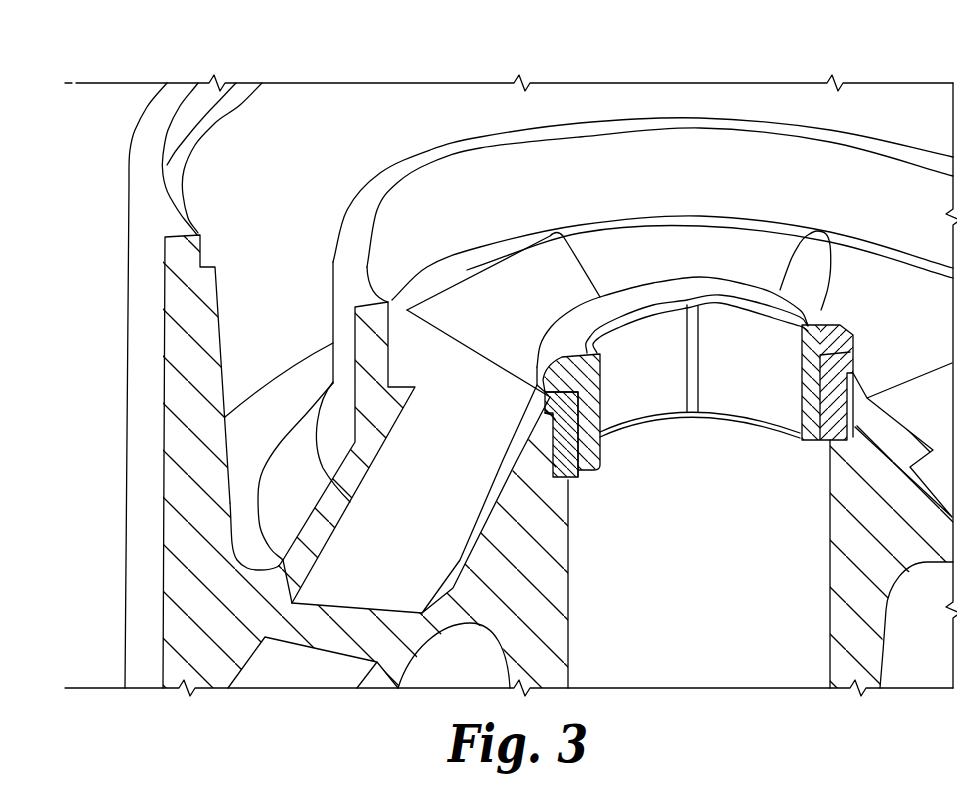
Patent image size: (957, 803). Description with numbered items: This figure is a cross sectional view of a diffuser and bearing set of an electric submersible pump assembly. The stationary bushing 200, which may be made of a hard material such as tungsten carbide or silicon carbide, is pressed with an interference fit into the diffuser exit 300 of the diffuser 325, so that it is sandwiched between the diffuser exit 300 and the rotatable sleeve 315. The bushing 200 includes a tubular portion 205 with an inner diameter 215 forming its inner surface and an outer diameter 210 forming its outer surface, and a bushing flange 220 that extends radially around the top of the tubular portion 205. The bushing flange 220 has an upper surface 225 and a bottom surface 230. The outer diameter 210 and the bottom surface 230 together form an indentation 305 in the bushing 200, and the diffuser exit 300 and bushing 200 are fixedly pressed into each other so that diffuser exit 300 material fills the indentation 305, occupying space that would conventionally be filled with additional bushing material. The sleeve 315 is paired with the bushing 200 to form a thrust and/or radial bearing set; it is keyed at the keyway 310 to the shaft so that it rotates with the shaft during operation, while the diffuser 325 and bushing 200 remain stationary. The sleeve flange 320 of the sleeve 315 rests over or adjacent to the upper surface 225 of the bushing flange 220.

The bushing 200 is at (558, 454).
The tubular portion 205 is at (567, 437).
The outer diameter 210 is at (550, 470).
The inner diameter 215 is at (580, 477).
The bushing flange 220 is at (843, 364).
The upper surface 225 is at (538, 403).
The bottom surface 230 is at (548, 428).
The diffuser exit 300 is at (535, 512).
The indentation 305 is at (857, 410).
The keyway 310 is at (695, 318).
The sleeve 315 is at (778, 350).
The sleeve flange 320 is at (537, 363).
The diffuser 325 is at (200, 484).